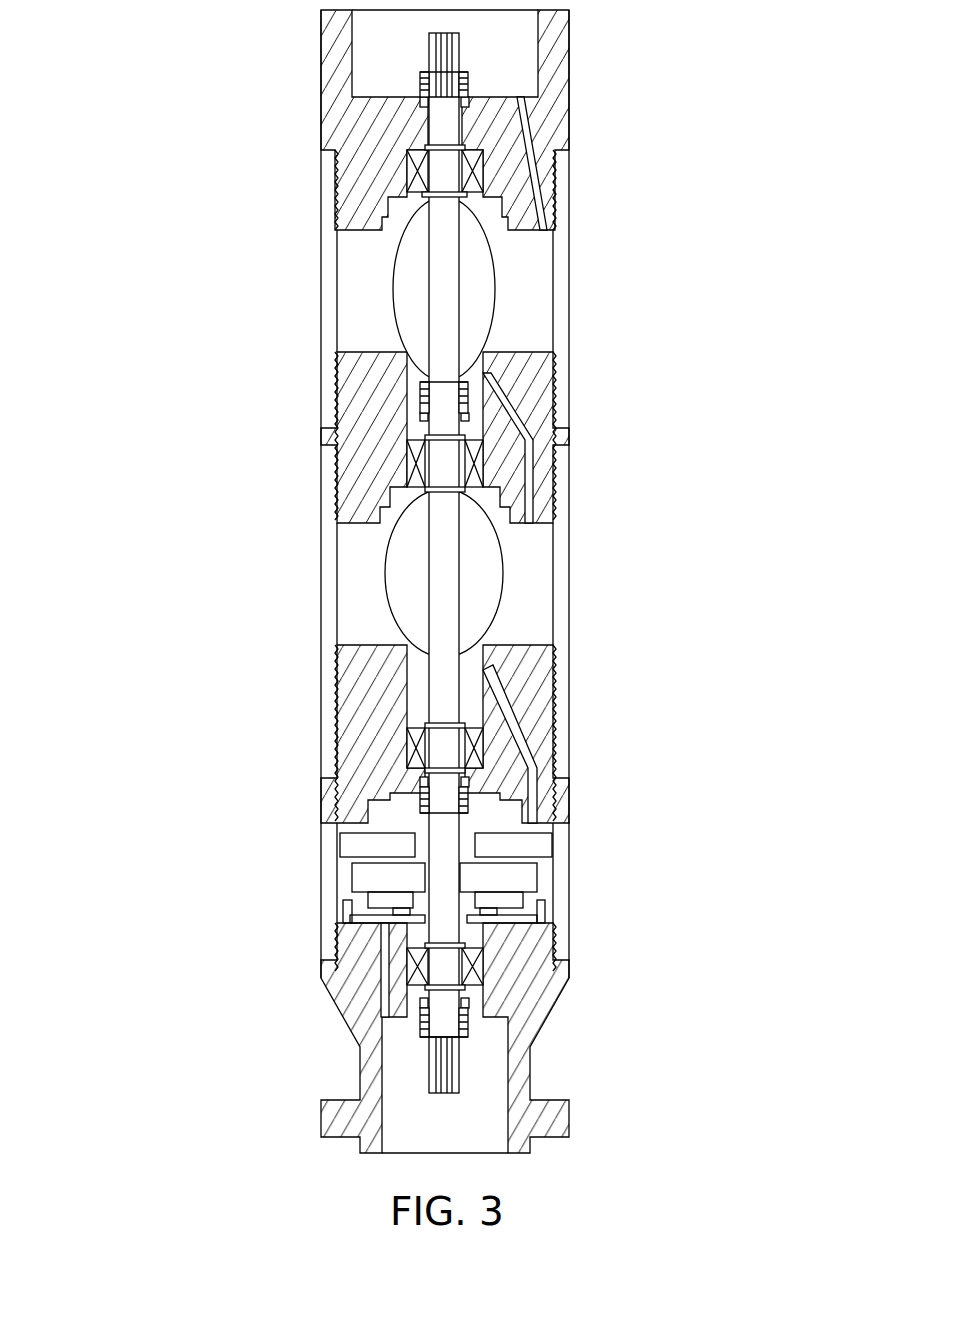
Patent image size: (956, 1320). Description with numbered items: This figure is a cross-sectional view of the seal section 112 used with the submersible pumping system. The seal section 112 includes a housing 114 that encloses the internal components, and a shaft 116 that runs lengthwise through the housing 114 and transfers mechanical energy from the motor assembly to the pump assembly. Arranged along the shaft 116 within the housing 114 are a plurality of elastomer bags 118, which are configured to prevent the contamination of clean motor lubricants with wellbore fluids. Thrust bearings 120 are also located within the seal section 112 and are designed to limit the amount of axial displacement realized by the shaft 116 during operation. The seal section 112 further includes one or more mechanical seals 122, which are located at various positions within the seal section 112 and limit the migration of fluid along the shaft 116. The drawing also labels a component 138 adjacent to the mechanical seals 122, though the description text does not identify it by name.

The seal section 112 is at (126, 756).
The housing 114 is at (568, 278).
The shaft 116 is at (446, 308).
The elastomer bags 118 is at (475, 255).
The thrust bearings 120 is at (514, 850).
The mechanical seals 122 is at (467, 78).
The bushing 138 is at (423, 102).